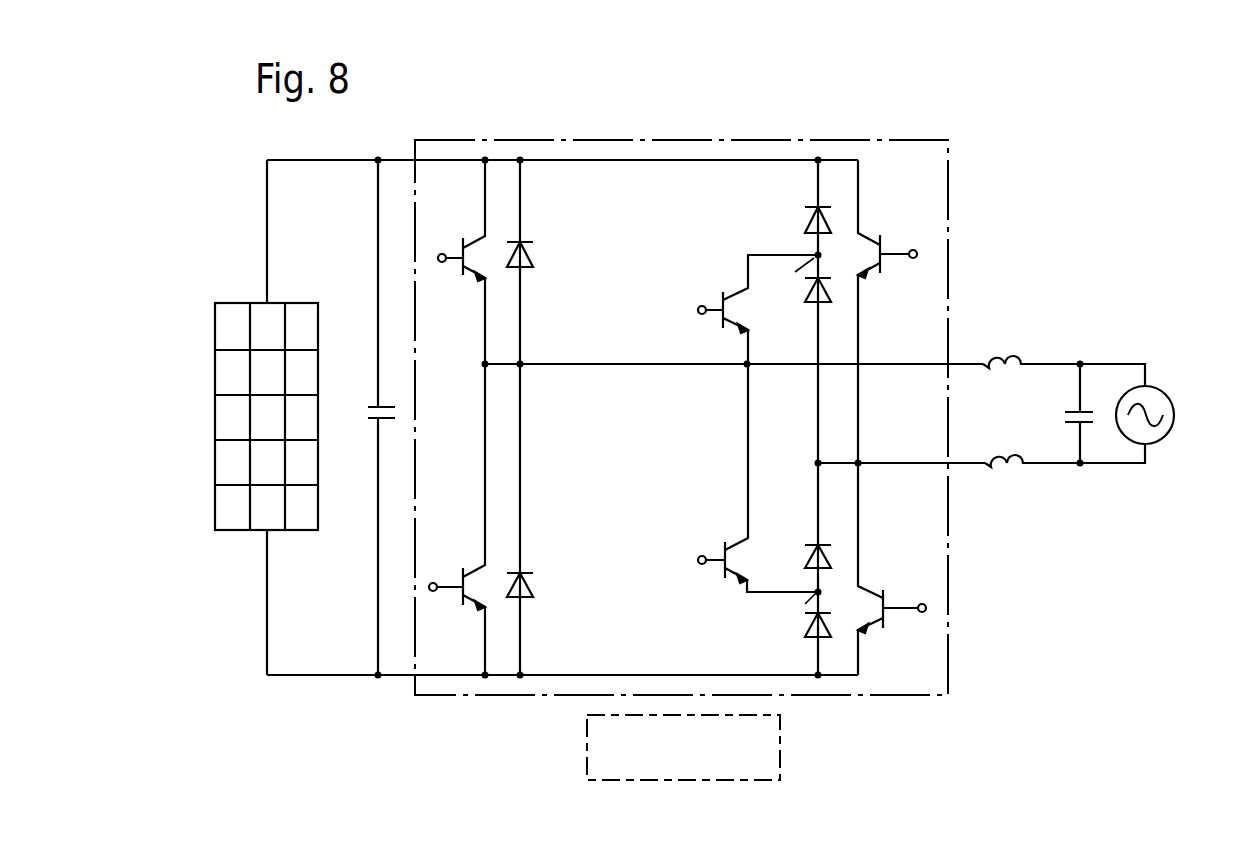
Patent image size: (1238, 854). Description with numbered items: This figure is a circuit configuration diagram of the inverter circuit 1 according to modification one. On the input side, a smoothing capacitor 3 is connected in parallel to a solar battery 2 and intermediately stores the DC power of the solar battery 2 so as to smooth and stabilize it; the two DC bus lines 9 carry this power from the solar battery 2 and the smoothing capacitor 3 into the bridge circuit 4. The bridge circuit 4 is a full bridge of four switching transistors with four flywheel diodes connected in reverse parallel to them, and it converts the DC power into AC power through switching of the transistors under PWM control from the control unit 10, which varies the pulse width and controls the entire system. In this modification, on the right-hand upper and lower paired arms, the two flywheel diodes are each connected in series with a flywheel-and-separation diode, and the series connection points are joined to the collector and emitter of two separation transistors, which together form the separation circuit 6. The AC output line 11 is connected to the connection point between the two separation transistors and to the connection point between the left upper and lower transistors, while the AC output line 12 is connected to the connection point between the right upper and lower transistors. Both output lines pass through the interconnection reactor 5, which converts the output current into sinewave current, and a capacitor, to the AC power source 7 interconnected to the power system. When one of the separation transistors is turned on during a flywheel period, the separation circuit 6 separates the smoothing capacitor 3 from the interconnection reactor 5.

The inverter circuit 1 is at (827, 138).
The solar battery 2 is at (237, 302).
The smoothing capacitor 3 is at (374, 406).
The bridge circuit 4 is at (660, 148).
The interconnection reactor 5 is at (1036, 342).
The separation circuit 6 is at (702, 235).
The AC power source 7 is at (1152, 387).
The DC bus lines 9 is at (402, 157).
The control unit 10 is at (781, 748).
The AC output line 11 is at (880, 363).
The AC output line 12 is at (880, 462).